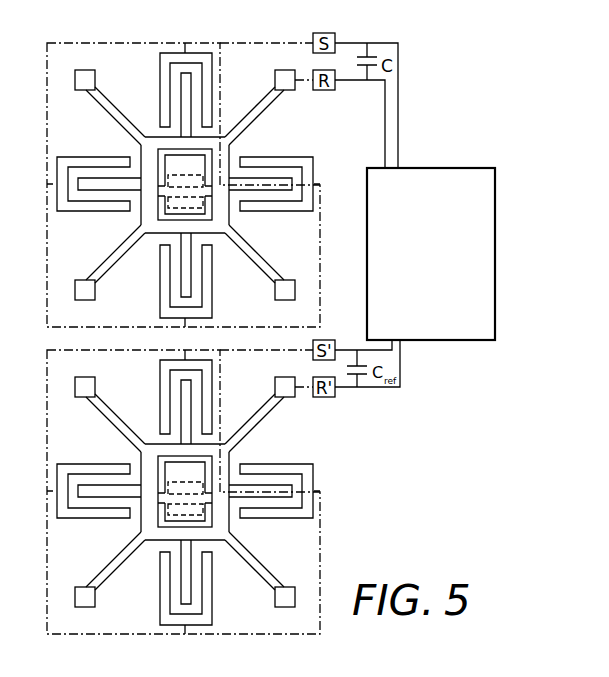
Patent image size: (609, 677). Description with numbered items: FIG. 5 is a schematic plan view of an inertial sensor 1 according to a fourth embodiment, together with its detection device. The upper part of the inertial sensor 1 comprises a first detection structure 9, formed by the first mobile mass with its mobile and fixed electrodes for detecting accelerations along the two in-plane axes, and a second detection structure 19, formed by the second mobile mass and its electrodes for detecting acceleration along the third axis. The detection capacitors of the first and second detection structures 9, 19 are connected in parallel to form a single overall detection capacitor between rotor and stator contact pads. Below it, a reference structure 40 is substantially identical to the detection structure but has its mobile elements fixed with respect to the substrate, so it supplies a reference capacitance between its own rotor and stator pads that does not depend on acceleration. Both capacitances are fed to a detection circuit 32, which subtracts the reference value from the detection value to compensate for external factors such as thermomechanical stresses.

The inertial sensor 1 is at (160, 263).
The first detection structure 9 is at (155, 108).
The second detection structure 19 is at (205, 218).
The reference structure 40 is at (42, 346).
The detection circuit 32 is at (457, 340).